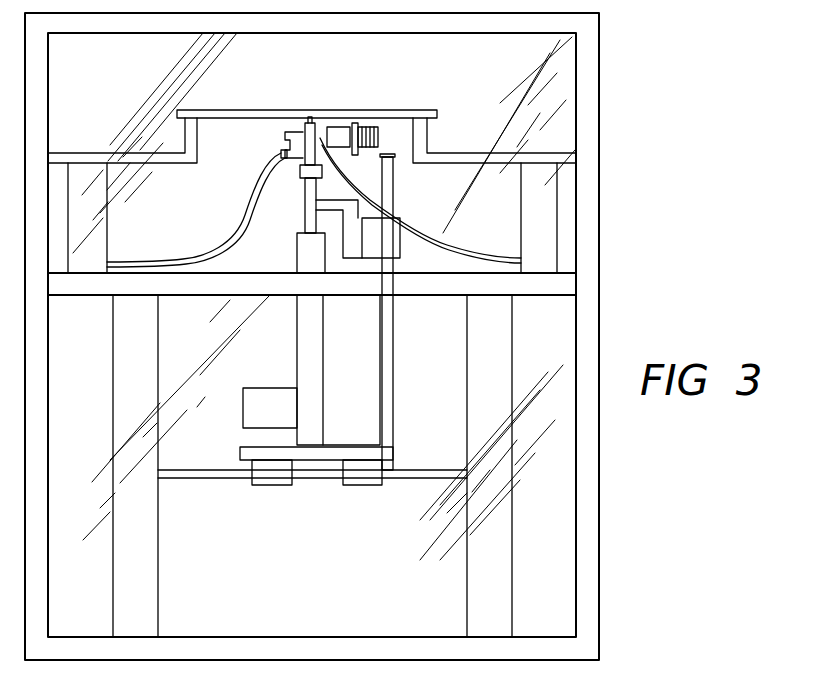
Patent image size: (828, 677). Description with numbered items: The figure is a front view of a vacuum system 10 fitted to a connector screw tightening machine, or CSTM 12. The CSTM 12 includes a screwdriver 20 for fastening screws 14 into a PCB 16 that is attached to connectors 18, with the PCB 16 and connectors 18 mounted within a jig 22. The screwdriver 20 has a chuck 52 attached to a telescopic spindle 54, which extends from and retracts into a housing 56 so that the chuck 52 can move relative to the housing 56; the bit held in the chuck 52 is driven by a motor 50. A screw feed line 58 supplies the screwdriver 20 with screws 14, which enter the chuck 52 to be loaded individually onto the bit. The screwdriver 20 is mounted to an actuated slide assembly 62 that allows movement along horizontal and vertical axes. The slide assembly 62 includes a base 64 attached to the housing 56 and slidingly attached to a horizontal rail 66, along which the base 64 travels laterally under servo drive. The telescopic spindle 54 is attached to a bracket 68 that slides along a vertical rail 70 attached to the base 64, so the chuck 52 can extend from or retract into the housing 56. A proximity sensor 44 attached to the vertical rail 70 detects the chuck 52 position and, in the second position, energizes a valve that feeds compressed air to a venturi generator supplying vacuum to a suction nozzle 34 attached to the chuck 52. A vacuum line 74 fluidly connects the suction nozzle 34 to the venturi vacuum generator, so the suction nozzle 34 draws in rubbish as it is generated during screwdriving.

The vacuum system 10 is at (273, 135).
The CSTM 12 is at (604, 62).
The screws 14 is at (333, 133).
The PCB 16 is at (277, 108).
The connectors 18 is at (310, 117).
The screwdriver 20 is at (244, 360).
The jig 22 is at (438, 107).
The suction nozzle 34 is at (290, 170).
The proximity sensor 44 is at (372, 123).
The motor 50 is at (290, 419).
The chuck 52 is at (312, 152).
The telescopic spindle 54 is at (298, 233).
The housing 56 is at (315, 352).
The screw feed line 58 is at (470, 247).
The actuated slide assembly 62 is at (266, 510).
The base 64 is at (240, 447).
The horizontal rail 66 is at (413, 473).
The bracket 68 is at (390, 243).
The vertical rail 70 is at (387, 420).
The vacuum line 74 is at (191, 250).